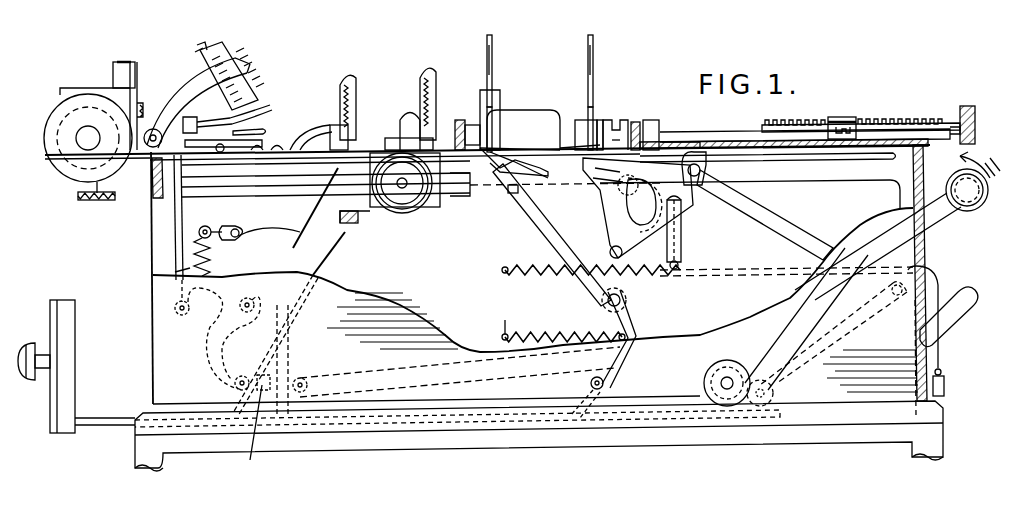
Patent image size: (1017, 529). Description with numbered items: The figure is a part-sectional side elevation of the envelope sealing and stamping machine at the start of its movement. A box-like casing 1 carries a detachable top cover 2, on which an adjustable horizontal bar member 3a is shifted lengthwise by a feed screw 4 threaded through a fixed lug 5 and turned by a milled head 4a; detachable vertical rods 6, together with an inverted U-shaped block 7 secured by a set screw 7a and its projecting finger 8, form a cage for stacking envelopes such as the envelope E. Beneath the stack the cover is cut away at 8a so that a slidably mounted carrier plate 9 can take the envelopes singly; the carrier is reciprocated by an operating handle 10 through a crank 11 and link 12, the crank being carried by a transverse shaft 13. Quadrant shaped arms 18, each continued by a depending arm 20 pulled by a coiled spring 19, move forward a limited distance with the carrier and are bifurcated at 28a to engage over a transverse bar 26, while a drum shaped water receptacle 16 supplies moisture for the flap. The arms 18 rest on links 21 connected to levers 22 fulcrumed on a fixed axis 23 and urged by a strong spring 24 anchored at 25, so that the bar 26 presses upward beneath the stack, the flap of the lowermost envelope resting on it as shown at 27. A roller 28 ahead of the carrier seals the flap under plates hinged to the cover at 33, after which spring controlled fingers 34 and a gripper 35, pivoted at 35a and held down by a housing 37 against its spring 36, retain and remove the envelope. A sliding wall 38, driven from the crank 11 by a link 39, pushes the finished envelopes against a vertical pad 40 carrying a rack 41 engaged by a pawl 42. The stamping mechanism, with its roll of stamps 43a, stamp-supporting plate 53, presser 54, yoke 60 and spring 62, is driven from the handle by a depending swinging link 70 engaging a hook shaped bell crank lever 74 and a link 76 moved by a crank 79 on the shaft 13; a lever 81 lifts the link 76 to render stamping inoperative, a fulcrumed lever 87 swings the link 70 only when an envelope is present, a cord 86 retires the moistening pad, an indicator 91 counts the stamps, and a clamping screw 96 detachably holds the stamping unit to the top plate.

The box like casing 1 is at (165, 352).
The detachable top cover 2 is at (747, 125).
The adjustable horizontal bar member 3a is at (618, 118).
The feed screw 4 is at (706, 125).
The milled head 4a is at (958, 108).
The fixed lug 5 is at (842, 117).
The detachable vertical rods 6 is at (495, 73).
The inverted U shaped block 7 is at (600, 118).
The set screw 7a is at (640, 120).
The projecting finger 8 is at (575, 115).
The cut away portion of top cover 8a is at (508, 150).
The carrier plate 9 is at (772, 162).
The operating handle 10 is at (938, 218).
The crank 11 is at (857, 332).
The link 12 is at (770, 223).
The transverse shaft 13 is at (705, 386).
The drum shaped water receptacle 16 is at (618, 236).
The quadrant shaped arms 18 is at (658, 148).
The coiled spring 19 is at (591, 282).
The depending arm 20 is at (684, 235).
The links 21 is at (640, 290).
The transversely aligned levers 22 is at (535, 223).
The fixed common axis 23 is at (626, 305).
The strong coiled spring 24 is at (563, 336).
The spring anchorage 25 is at (498, 326).
The transverse bar 26 is at (488, 168).
The envelope flap position 27 is at (505, 175).
The roller 28 is at (402, 195).
The bifurcated forward end 28a is at (605, 205).
The hinge connection 33 is at (218, 152).
The spring controlled fingers 34 is at (312, 222).
The gripper 35 is at (348, 224).
The gripper pivot 35a is at (245, 222).
The spring 36 is at (208, 258).
The specially shaped housing 37 is at (418, 207).
The wall 38 is at (290, 347).
The link 39 is at (455, 385).
The vertical pad 40 is at (68, 318).
The rack 41 is at (636, 412).
The pawl 42 is at (578, 388).
The roll of stamps 43a is at (75, 168).
The plate 53 is at (257, 128).
The presser 54 is at (268, 106).
The yoke 60 is at (185, 90).
The spring 62 is at (252, 74).
The depending swinging link 70 is at (175, 265).
The hook shaped bell crank lever 74 is at (252, 303).
The link 76 is at (249, 429).
The crank 79 is at (775, 380).
The lever 81 is at (962, 312).
The cable or cord 86 is at (944, 345).
The fulcrumed lever 87 is at (150, 160).
The indicator 91 is at (113, 72).
The clamping screw 96 is at (92, 198).
The envelope E is at (528, 148).